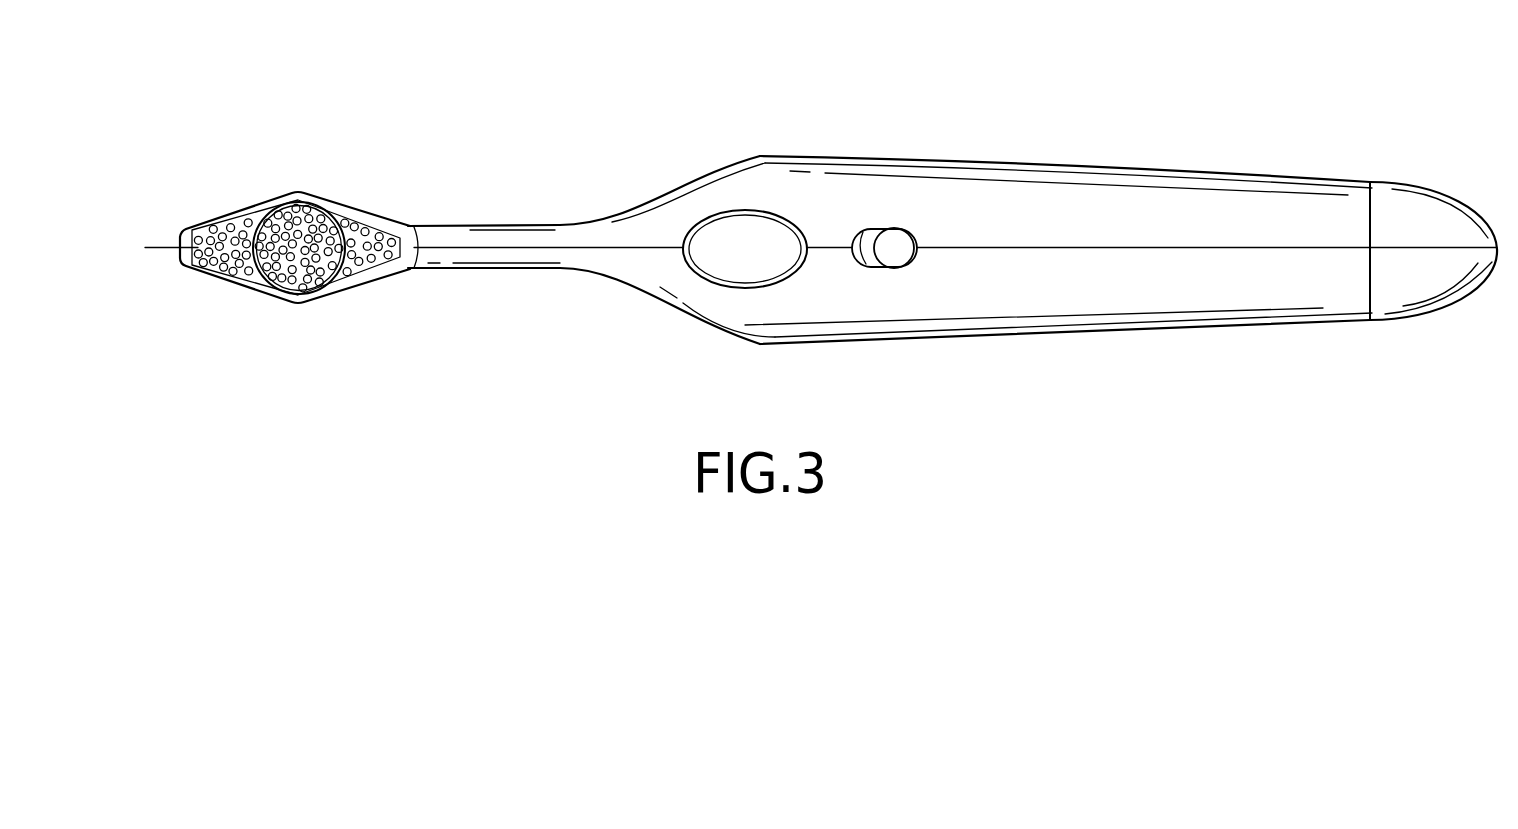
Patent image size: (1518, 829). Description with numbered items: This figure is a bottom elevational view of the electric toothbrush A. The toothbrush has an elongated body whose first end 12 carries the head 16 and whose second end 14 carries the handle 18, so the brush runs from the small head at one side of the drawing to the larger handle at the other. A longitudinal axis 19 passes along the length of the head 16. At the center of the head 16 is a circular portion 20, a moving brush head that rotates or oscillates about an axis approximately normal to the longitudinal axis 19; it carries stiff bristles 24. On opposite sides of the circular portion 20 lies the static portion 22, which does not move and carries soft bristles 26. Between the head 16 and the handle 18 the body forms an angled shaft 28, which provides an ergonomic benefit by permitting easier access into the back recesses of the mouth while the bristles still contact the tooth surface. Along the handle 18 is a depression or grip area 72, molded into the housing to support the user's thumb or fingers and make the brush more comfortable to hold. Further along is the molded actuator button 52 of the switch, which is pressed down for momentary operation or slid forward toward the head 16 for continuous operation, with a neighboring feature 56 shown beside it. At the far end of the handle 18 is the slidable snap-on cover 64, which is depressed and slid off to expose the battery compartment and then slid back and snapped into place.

The electric toothbrush A is at (922, 140).
The first end 12 is at (405, 271).
The second end 14 is at (1325, 290).
The head 16 is at (218, 216).
The handle 18 is at (1292, 208).
The longitudinal axis 19 is at (155, 247).
The circular portion 20 is at (303, 200).
The static portion 22 is at (365, 227).
The stiff bristles 24 is at (298, 289).
The soft bristles 26 is at (212, 268).
The angled shaft 28 is at (473, 256).
The molded actuator button 52 is at (893, 238).
The slot 56 is at (863, 262).
The slidable snap-on cover 64 is at (1408, 283).
The grip area 72 is at (747, 230).